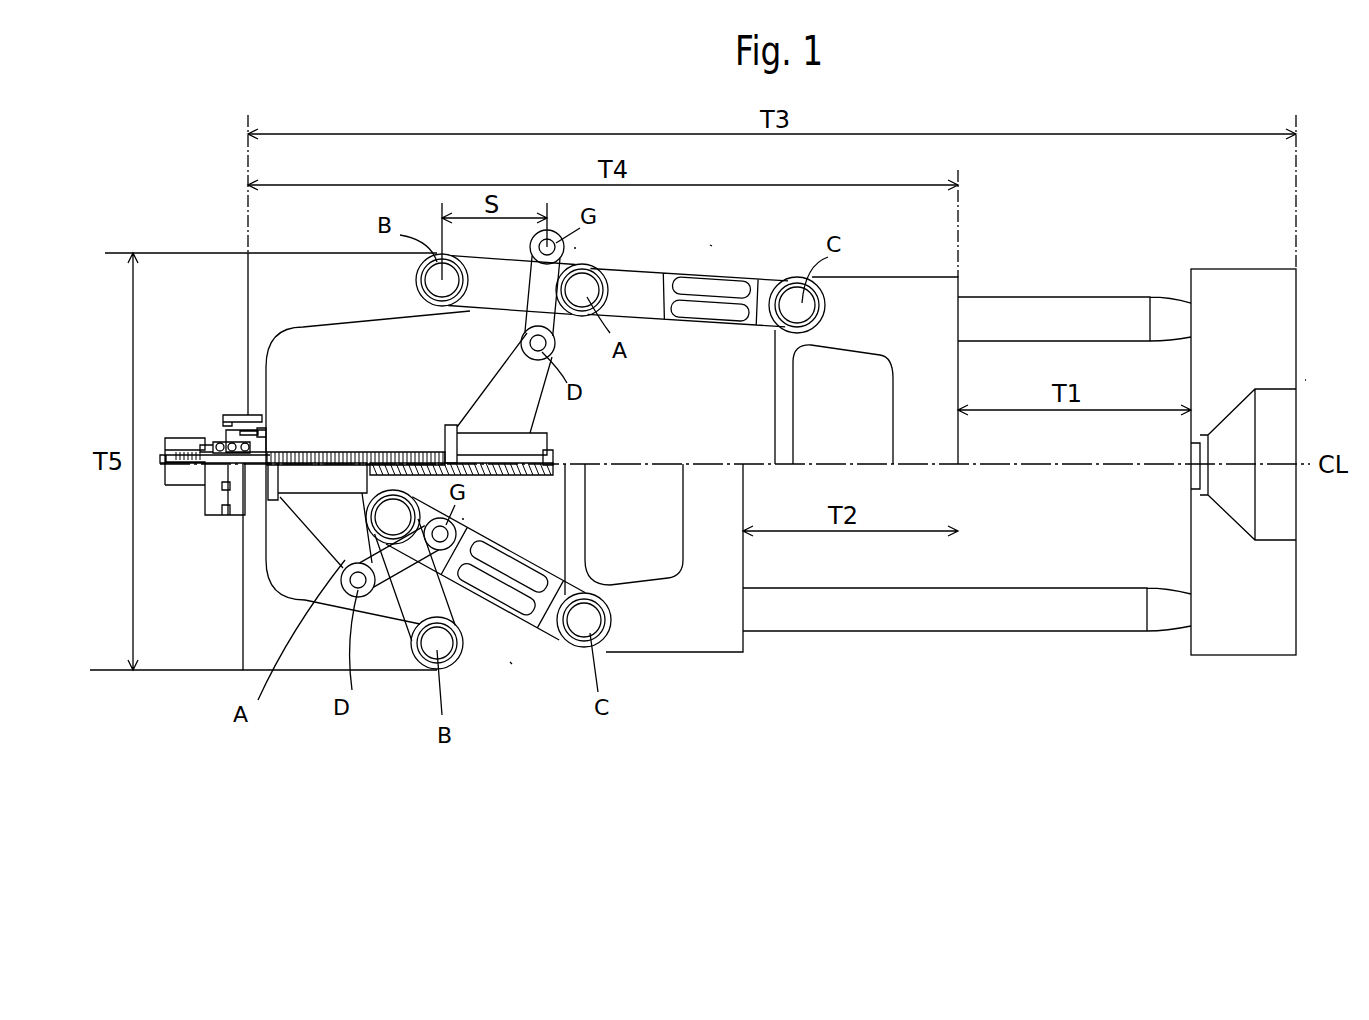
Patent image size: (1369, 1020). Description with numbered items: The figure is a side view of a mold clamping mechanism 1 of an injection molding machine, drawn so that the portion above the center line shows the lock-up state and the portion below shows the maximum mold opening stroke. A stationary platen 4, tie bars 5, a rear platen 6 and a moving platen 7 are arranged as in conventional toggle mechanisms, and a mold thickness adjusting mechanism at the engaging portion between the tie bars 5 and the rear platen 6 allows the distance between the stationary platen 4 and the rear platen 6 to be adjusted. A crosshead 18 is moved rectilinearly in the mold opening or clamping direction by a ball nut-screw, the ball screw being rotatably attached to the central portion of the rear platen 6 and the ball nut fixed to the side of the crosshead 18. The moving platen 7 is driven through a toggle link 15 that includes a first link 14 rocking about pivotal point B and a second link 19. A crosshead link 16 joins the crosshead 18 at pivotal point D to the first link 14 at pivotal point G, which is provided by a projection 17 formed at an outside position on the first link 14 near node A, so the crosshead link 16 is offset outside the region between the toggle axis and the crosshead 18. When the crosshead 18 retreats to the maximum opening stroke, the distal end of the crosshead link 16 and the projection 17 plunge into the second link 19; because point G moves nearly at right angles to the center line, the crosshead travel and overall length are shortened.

The mold clamping mechanism 1 is at (1316, 386).
The stationary platen 4 is at (1237, 640).
The tie bars 5 is at (1063, 313).
The rear platen 6 is at (290, 670).
The moving platen 7 is at (895, 284).
The first link 14 is at (488, 293).
The toggle link 15 is at (722, 252).
The crosshead link 16 is at (541, 306).
The projection 17 is at (588, 251).
The crosshead 18 is at (532, 445).
The second link 19 is at (710, 313).